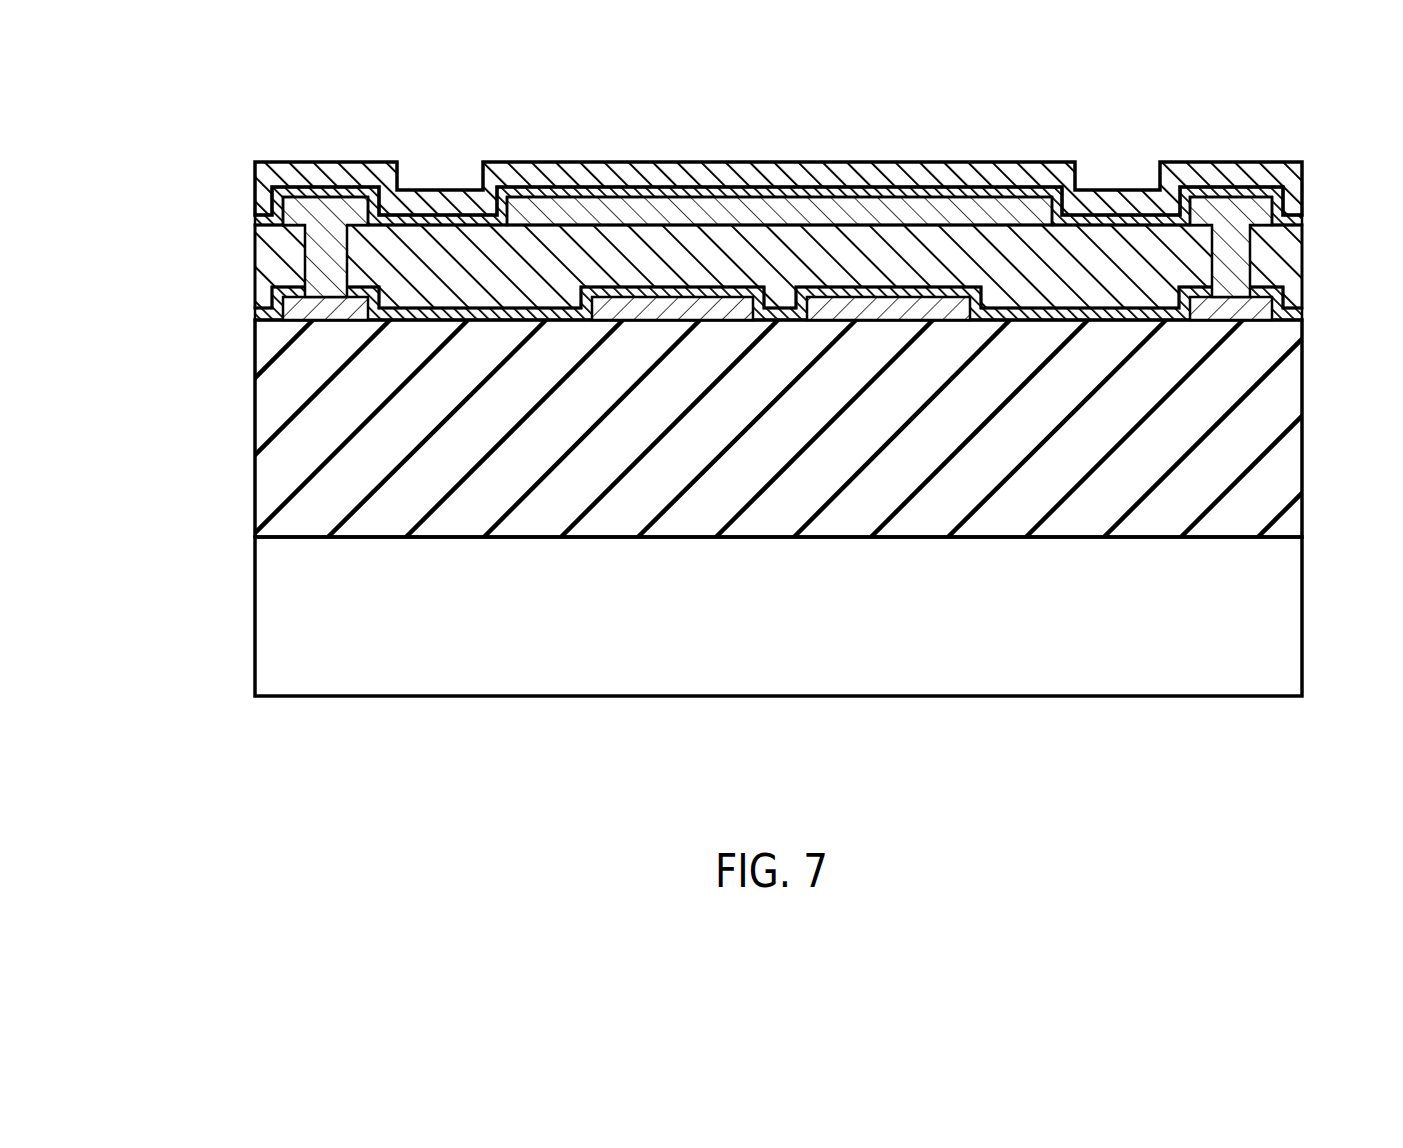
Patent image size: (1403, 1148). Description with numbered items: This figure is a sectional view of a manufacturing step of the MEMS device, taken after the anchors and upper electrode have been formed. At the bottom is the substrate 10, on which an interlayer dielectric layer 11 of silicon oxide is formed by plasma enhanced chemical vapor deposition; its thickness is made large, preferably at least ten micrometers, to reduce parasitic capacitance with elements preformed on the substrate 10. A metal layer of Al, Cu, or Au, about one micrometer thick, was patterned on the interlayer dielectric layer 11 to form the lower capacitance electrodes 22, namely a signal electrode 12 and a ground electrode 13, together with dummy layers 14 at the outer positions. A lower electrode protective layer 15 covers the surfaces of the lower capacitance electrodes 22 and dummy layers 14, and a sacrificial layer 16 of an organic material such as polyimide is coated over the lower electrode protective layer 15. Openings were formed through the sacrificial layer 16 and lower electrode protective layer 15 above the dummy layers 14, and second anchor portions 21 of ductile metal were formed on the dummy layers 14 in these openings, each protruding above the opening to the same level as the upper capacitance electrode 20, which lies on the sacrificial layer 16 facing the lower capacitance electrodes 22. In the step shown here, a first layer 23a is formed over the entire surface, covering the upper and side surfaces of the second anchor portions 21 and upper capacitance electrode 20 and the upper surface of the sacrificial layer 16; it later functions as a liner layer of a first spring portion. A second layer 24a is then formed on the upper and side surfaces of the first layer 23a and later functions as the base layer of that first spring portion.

The substrate 10 is at (1296, 606).
The interlayer dielectric layer 11 is at (1296, 454).
The signal electrode 12 is at (678, 312).
The ground electrode 13 is at (890, 312).
The dummy layer 14 is at (312, 320).
The lower electrode protective layer 15 is at (1282, 294).
The sacrificial layer 16 is at (1300, 268).
The upper capacitance electrode 20 is at (822, 210).
The second anchor portion 21 is at (315, 262).
The lower capacitance electrode 22 is at (781, 549).
The first layer 23a is at (1300, 210).
The second layer 24a is at (1300, 172).